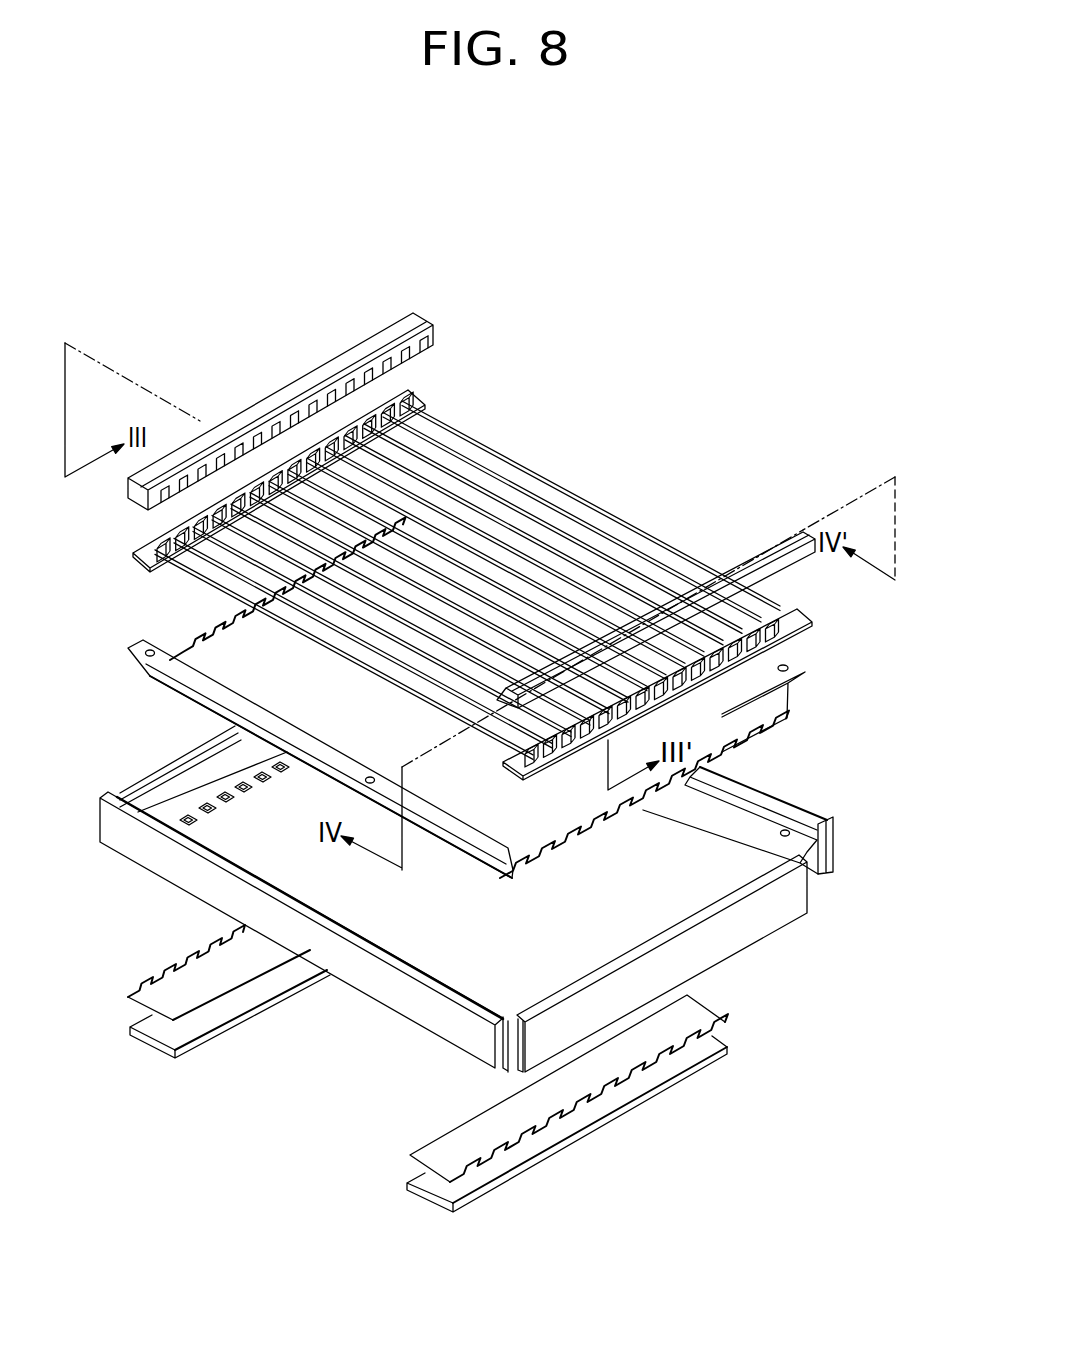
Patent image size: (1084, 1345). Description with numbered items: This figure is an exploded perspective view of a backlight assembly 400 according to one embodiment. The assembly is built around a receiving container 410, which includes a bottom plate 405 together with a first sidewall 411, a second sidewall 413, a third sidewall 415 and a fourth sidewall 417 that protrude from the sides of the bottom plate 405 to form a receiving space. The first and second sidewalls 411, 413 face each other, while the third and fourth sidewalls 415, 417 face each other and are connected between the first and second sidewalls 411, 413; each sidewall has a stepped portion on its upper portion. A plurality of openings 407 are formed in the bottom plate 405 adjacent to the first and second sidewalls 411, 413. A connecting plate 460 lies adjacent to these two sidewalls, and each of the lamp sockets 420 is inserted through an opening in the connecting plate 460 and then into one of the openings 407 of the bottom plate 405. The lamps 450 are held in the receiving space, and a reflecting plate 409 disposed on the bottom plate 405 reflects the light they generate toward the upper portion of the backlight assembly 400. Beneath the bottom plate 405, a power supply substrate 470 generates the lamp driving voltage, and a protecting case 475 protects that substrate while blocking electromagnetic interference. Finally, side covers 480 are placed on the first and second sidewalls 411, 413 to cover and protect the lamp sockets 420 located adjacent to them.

The backlight assembly 400 is at (588, 277).
The bottom plate 405 is at (672, 893).
The openings 407 is at (188, 814).
The reflecting plate 409 is at (790, 708).
The receiving container 410 is at (844, 850).
The first sidewall 411 is at (793, 887).
The second sidewall 413 is at (183, 757).
The third sidewall 415 is at (415, 1006).
The fourth sidewall 417 is at (790, 805).
The lamp sockets 420 is at (770, 604).
The lamps 450 is at (585, 492).
The connecting plate 460 is at (792, 620).
The power supply substrate 470 is at (142, 995).
The protecting case 475 is at (168, 1055).
The side covers 480 is at (430, 317).